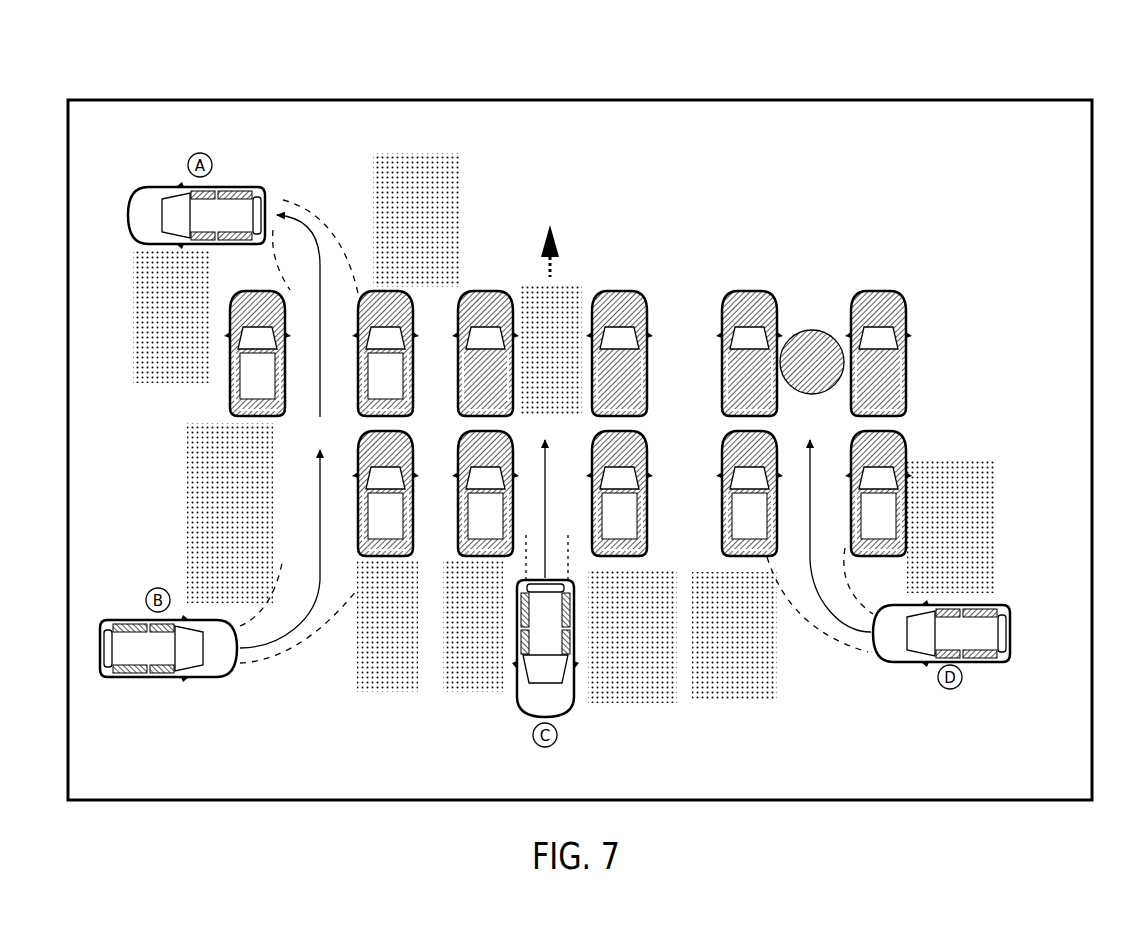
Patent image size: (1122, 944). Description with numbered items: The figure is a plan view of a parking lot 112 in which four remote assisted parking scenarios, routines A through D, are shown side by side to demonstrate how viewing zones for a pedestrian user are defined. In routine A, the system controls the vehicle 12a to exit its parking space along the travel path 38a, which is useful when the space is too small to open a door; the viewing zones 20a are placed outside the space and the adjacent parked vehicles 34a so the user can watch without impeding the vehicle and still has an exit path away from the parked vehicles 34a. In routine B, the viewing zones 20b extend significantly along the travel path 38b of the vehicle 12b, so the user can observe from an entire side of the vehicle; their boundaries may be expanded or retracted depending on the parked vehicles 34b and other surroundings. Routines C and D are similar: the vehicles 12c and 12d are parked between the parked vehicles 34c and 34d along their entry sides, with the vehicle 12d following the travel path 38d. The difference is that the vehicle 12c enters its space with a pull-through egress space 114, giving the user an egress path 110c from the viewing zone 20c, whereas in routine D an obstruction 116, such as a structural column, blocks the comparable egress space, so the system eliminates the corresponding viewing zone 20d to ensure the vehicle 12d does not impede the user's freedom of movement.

The parking lot 112 is at (1032, 126).
The vehicle 12a is at (204, 224).
The vehicle 12b is at (142, 657).
The vehicle 12c is at (533, 699).
The vehicle 12d is at (945, 639).
The viewing zones 20a is at (296, 268).
The viewing zones 20b is at (302, 557).
The viewing zone 20c is at (560, 521).
The viewing zone 20d is at (843, 580).
The parked vehicles 34a is at (245, 394).
The parked vehicles 34b is at (373, 534).
The parked vehicles 34c is at (473, 534).
The parked vehicles 34d is at (737, 534).
The travel path 38a is at (300, 222).
The travel path 38b is at (277, 633).
The travel path 38d is at (828, 605).
The egress path 110c is at (560, 272).
The egress space 114 is at (583, 290).
The obstruction 116 is at (812, 330).